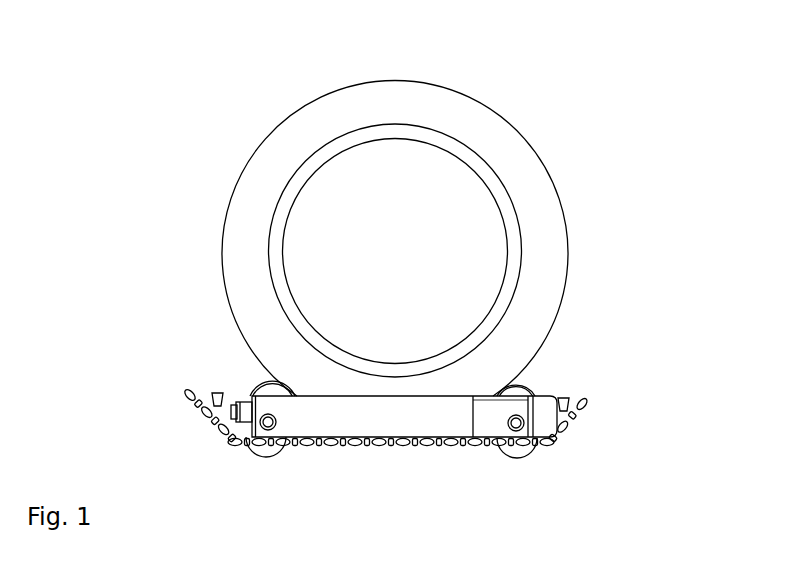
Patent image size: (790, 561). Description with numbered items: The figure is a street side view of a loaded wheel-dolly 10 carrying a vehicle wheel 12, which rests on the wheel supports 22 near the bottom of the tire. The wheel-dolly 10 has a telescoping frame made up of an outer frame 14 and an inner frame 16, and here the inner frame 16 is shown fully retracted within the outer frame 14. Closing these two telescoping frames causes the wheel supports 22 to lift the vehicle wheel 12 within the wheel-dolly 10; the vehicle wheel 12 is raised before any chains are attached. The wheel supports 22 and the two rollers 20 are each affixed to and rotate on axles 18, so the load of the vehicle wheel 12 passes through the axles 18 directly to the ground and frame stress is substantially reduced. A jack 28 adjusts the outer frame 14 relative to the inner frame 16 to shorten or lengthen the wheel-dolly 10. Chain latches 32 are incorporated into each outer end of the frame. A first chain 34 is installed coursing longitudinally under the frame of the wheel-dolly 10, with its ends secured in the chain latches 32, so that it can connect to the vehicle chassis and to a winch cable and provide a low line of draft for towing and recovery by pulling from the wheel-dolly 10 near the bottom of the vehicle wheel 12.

The wheel-dolly 10 is at (132, 152).
The vehicle wheel 12 is at (404, 238).
The outer frame 14 is at (404, 377).
The inner frame 16 is at (480, 359).
The axle 18 is at (392, 444).
The roller 20 is at (390, 464).
The wheel support 22 is at (395, 364).
The jack 28 is at (203, 371).
The chain latch 32 is at (393, 398).
The first chain 34 is at (391, 464).